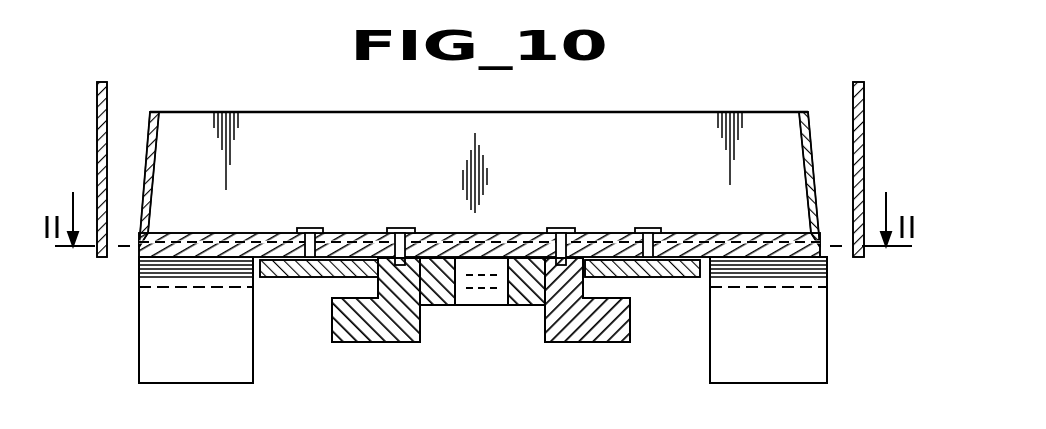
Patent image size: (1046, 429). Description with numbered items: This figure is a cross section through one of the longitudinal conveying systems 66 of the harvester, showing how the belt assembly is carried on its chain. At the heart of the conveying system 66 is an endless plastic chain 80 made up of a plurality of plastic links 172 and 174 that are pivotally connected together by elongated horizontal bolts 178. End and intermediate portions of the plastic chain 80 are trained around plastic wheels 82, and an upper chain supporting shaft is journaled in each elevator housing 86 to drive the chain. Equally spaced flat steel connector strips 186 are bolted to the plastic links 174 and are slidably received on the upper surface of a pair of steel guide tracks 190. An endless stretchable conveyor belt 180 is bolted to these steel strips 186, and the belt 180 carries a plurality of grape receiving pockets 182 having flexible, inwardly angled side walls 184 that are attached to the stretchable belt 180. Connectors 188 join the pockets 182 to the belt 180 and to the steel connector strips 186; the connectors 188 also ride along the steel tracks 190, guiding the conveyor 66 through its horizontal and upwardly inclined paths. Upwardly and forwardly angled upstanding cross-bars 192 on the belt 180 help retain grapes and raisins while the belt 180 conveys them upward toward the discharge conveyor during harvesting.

The conveying system 66 is at (696, 96).
The endless plastic chain 80 is at (332, 316).
The plastic wheels 82 is at (483, 320).
The elevator housing 86 is at (97, 102).
The plastic links 172 is at (520, 306).
The plastic links 174 is at (365, 343).
The elongated bolts 178 is at (462, 306).
The endless stretchable conveyor belt 180 is at (148, 262).
The grape receiving pockets 182 is at (477, 145).
The flexible side walls 184 is at (148, 126).
The steel connector strips 186 is at (770, 258).
The connectors 188 is at (310, 228).
The steel guide tracks 190 is at (333, 276).
The upstanding cross-bars 192 is at (528, 128).